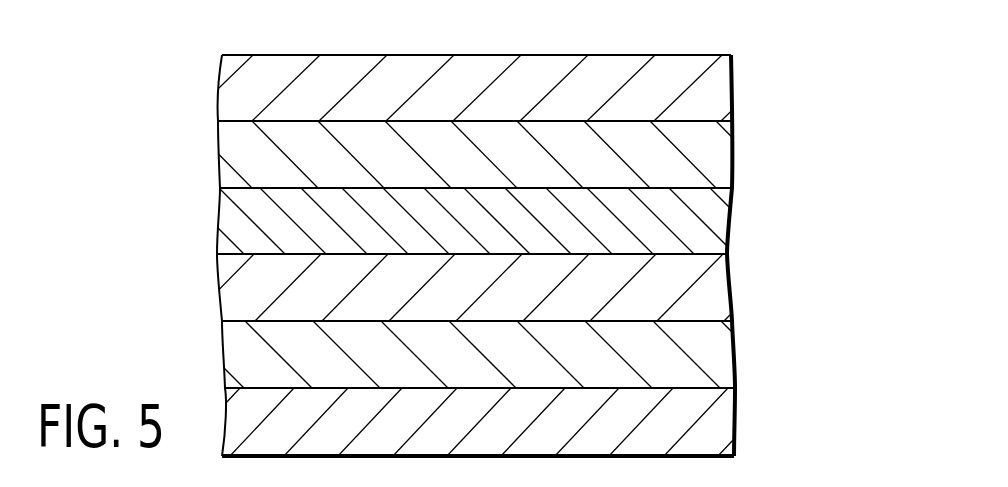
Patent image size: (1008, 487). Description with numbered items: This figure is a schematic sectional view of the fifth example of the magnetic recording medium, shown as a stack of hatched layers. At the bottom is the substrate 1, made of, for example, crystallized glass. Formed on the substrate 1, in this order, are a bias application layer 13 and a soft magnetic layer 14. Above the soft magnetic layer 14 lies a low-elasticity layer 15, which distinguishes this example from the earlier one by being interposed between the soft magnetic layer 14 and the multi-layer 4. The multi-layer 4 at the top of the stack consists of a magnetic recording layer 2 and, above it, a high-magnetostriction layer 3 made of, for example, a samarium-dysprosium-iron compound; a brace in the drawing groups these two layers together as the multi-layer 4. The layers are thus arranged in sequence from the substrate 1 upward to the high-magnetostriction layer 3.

The substrate 1 is at (715, 425).
The bias application layer 13 is at (715, 362).
The soft magnetic layer 14 is at (715, 290).
The low-elasticity layer 15 is at (715, 222).
The magnetic recording layer 2 is at (484, 154).
The high-magnetostriction layer 3 is at (715, 90).
The multi-layer 4 is at (511, 121).